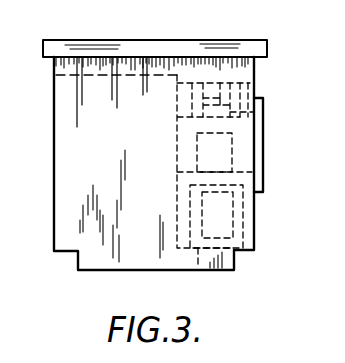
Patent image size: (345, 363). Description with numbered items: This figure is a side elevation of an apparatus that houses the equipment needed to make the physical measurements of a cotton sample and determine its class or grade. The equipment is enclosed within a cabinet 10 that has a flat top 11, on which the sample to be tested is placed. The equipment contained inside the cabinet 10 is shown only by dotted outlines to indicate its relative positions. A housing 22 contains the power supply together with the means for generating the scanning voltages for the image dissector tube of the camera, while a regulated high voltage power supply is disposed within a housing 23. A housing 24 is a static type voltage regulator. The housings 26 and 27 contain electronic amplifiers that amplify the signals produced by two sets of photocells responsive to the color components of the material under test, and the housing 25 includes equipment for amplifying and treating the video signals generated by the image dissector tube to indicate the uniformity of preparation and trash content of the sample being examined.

The cabinet 10 is at (63, 178).
The flat top 11 is at (64, 47).
The housing 22 is at (236, 234).
The housing 23 is at (224, 211).
The housing 24 is at (222, 158).
The housing 25 is at (232, 110).
The housing 26 is at (240, 88).
The housing 27 is at (188, 88).